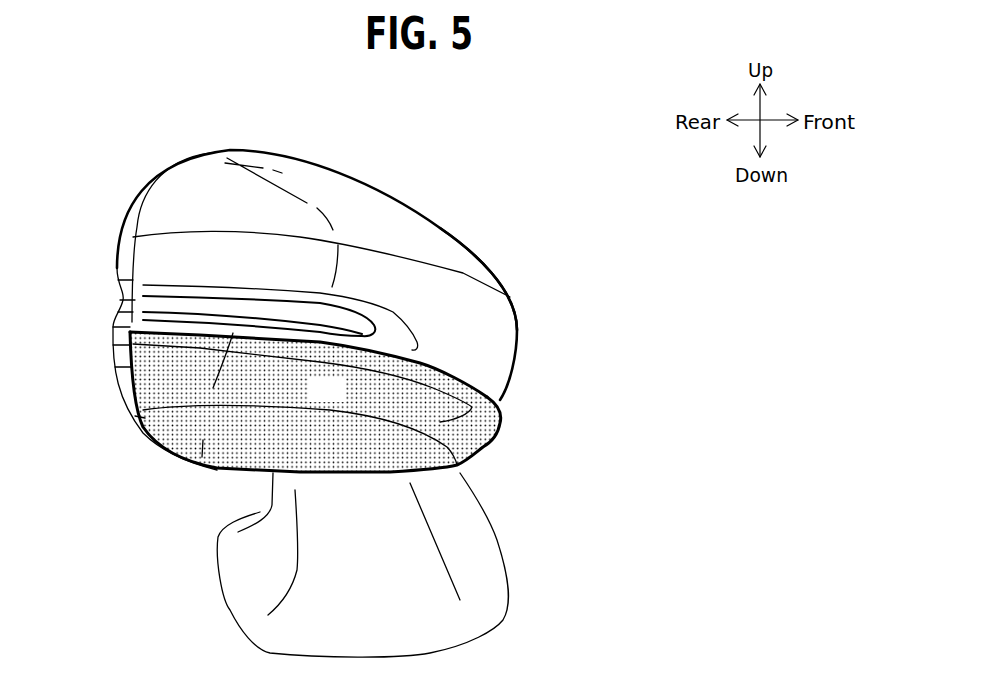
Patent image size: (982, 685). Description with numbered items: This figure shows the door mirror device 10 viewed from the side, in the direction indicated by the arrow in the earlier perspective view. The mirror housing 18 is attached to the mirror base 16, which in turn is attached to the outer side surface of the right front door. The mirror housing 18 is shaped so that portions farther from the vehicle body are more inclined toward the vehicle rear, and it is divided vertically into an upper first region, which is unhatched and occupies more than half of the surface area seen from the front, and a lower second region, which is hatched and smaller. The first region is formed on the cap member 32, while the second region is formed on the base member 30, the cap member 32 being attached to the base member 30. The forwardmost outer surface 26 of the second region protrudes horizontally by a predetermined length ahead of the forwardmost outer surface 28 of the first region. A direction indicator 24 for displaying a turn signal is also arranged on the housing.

The door mirror device 10 is at (506, 157).
The mirror base 16 is at (477, 573).
The mirror housing 18 is at (386, 177).
The direction indicator 24 is at (155, 304).
The outer surface of the second region 26 is at (437, 378).
The outer surface of the first region 28 is at (463, 273).
The base member 30 is at (200, 462).
The cap member 32 is at (432, 230).